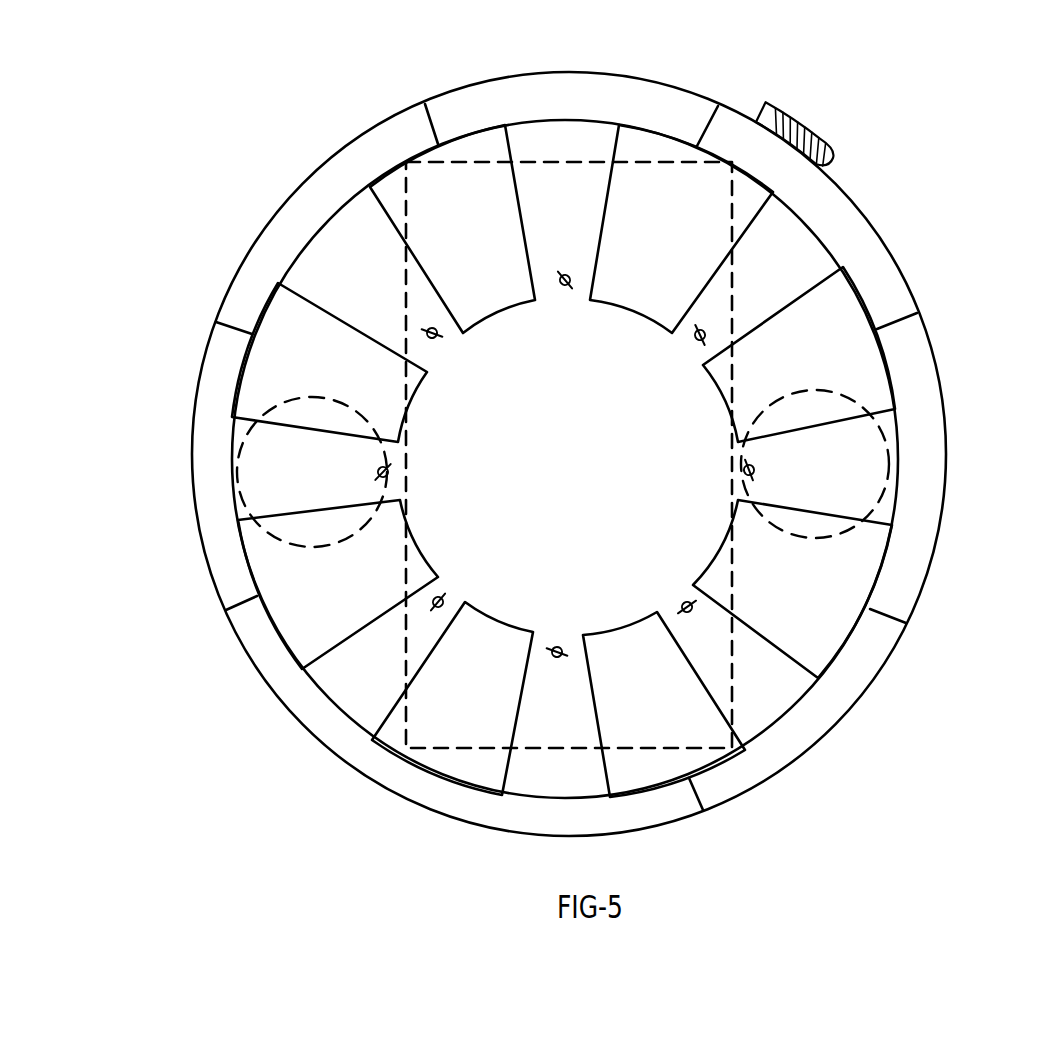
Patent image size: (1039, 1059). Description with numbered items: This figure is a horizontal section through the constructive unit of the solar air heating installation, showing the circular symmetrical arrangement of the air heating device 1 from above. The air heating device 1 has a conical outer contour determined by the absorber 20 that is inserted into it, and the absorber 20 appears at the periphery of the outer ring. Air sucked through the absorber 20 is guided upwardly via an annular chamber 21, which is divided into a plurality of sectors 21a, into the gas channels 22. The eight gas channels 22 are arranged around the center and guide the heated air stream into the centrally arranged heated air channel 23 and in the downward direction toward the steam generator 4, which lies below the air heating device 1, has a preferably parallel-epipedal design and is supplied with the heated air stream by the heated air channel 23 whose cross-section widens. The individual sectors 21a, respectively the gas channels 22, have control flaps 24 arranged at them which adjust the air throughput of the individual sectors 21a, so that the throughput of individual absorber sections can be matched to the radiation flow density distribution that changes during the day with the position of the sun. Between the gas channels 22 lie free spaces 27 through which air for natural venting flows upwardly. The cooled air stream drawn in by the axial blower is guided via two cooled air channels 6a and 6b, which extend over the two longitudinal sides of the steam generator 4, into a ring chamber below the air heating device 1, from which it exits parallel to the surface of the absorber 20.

The air heating device 1 is at (168, 366).
The steam generator 4 is at (730, 683).
The cooled air channel 6a is at (237, 490).
The cooled air channel 6b is at (843, 388).
The absorber 20 is at (828, 125).
The annular chamber 21 is at (937, 542).
The sector 21a is at (842, 698).
The gas channel 22 is at (355, 663).
The heated air channel 23 is at (580, 492).
The control flap 24 is at (457, 595).
The free space 27 is at (475, 246).